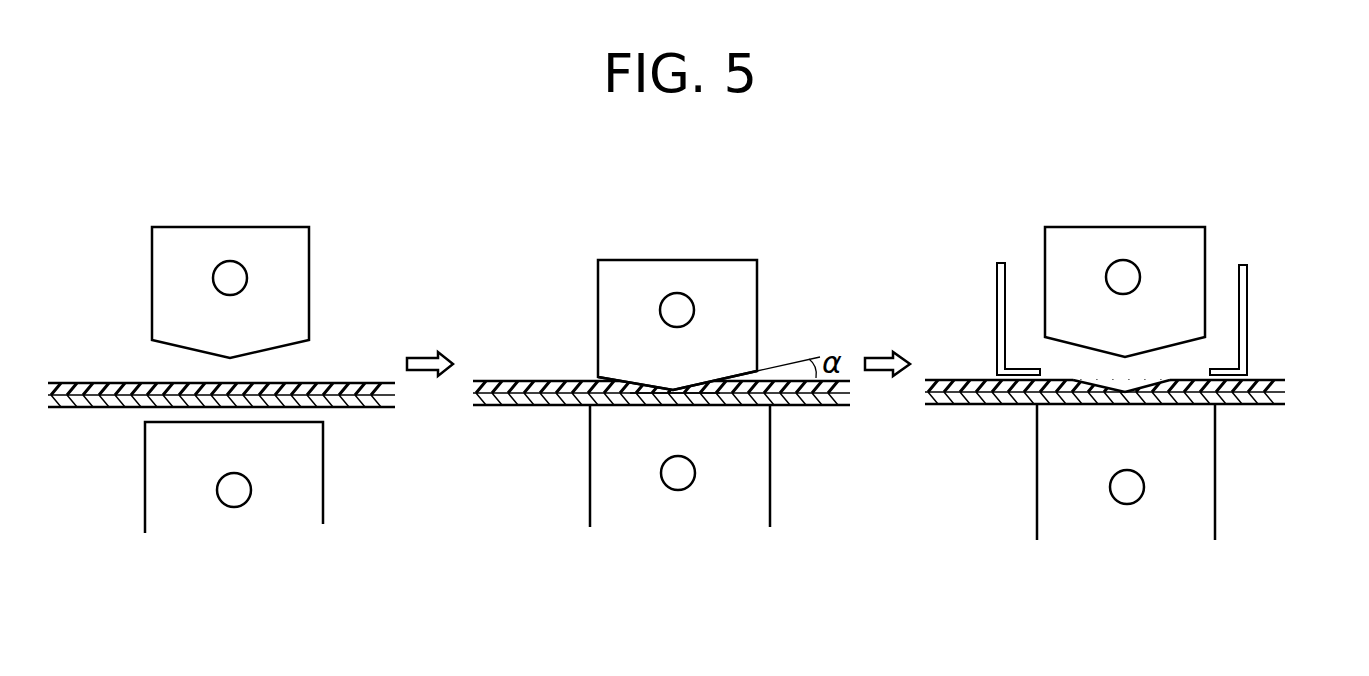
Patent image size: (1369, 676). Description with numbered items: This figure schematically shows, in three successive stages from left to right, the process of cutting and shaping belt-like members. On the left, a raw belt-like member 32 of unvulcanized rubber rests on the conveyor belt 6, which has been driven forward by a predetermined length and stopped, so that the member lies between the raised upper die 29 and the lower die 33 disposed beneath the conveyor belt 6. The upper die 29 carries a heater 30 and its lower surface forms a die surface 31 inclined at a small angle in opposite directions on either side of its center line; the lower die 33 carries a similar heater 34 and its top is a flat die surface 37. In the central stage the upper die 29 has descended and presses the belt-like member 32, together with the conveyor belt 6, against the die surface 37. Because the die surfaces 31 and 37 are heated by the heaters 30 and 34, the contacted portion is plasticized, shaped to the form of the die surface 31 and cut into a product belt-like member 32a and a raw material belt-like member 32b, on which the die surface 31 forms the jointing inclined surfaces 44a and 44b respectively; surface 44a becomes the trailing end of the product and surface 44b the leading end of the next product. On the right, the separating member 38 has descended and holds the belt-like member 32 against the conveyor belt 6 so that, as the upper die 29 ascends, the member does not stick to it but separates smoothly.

The conveyor belt 6 is at (73, 407).
The upper die 29 is at (300, 263).
The heater 30 is at (661, 307).
The die surface 31 is at (716, 384).
The belt-like member 32 is at (80, 383).
The product belt-like member 32a is at (848, 378).
The raw material belt-like member 32b is at (520, 381).
The lower die 33 is at (318, 460).
The heater 34 is at (662, 478).
The die surface 37 is at (730, 407).
The separating member 38 is at (997, 288).
The jointing inclined surface 44a is at (728, 406).
The jointing inclined surface 44b is at (630, 406).